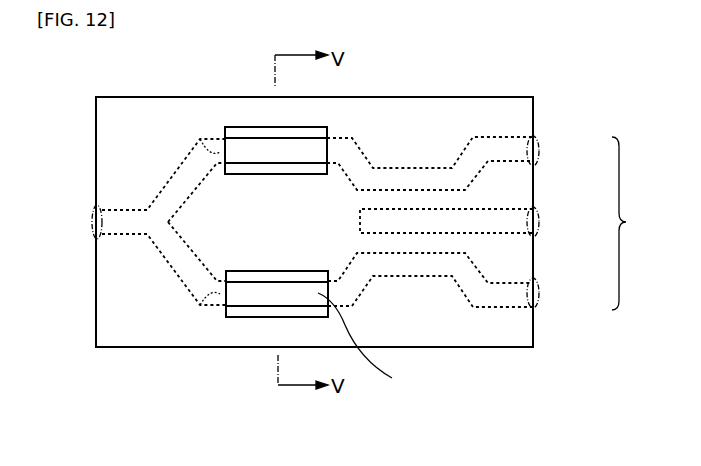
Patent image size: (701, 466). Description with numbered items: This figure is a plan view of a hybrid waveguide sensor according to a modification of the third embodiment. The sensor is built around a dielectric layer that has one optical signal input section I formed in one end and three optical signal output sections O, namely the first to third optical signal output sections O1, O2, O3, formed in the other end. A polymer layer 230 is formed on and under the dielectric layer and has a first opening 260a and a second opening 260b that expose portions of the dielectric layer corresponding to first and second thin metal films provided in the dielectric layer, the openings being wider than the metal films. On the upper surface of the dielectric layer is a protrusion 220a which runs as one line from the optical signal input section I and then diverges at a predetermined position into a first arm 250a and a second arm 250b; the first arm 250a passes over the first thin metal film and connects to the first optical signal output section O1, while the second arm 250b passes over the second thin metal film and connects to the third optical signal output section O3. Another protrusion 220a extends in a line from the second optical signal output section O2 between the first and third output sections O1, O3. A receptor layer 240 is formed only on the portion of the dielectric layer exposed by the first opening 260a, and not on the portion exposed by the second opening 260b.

The polymer layer 230 is at (477, 115).
The protrusion 220a is at (307, 148).
The second opening 260b is at (242, 130).
The first opening 260a is at (242, 311).
The second arm 250b is at (200, 139).
The first arm 250a is at (200, 298).
The receptor layer 240 is at (374, 343).
The optical signal input section I is at (92, 222).
The first optical signal output section O1 is at (540, 293).
The second optical signal output section O2 is at (540, 222).
The third optical signal output section O3 is at (540, 151).
The optical signal output sections O is at (629, 223).